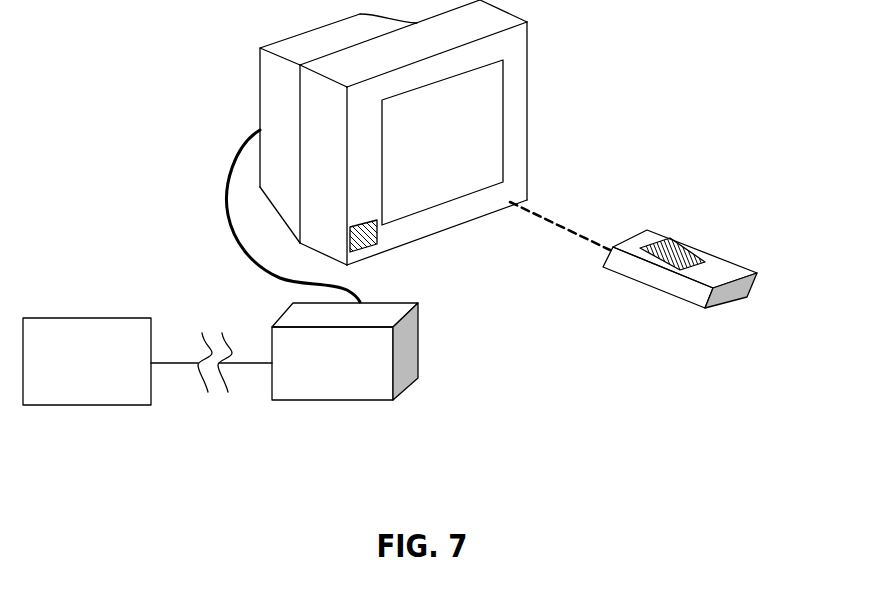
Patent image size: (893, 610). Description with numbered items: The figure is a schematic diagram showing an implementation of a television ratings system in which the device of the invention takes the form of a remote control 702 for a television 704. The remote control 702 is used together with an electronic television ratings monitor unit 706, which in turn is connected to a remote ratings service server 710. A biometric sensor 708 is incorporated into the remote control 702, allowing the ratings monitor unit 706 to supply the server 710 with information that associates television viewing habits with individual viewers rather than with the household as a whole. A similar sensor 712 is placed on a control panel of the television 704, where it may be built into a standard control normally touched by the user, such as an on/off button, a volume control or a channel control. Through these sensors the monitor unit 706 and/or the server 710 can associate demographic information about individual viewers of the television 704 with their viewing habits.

The remote control 702 is at (730, 268).
The television 704 is at (527, 83).
The electronic television ratings monitor unit 706 is at (408, 355).
The biometric sensor 708 is at (665, 242).
The remote ratings service server 710 is at (100, 318).
The sensor 712 is at (377, 240).